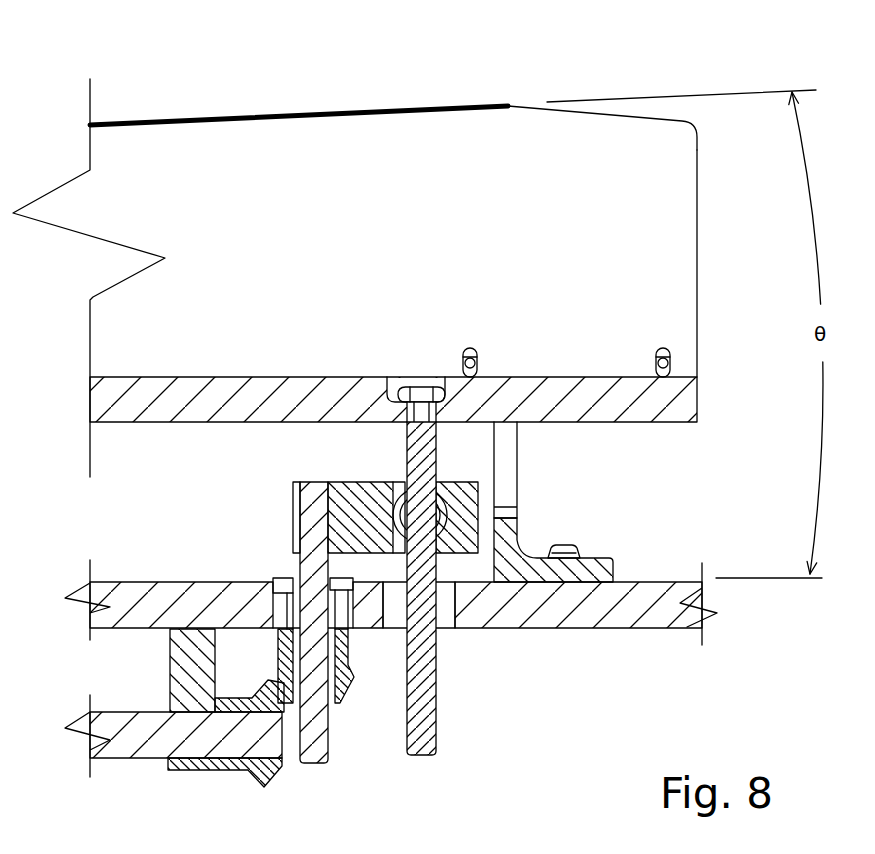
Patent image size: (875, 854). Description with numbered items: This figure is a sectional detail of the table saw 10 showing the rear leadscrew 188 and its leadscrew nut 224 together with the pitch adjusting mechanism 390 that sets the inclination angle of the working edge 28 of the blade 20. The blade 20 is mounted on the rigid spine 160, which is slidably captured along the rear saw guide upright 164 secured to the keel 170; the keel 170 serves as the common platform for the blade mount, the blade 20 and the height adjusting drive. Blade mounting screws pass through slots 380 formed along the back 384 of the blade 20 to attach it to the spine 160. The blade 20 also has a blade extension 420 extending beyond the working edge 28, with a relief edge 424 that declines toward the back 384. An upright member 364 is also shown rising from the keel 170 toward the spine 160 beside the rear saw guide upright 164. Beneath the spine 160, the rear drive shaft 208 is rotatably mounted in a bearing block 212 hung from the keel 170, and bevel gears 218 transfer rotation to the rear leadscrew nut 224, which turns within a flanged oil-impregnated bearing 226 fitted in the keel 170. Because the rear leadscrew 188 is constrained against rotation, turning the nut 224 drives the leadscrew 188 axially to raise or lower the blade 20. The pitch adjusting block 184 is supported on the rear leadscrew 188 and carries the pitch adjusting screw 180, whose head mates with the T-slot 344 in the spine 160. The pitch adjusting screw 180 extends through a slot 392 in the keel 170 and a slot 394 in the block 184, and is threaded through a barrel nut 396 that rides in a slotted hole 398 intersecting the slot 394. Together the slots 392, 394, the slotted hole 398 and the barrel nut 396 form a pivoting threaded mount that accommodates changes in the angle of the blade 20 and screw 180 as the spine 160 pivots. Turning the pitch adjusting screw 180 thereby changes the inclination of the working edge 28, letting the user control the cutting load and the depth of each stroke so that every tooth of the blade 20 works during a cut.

The table saw 10 is at (510, 96).
The blade 20 is at (295, 162).
The working edge 28 is at (261, 113).
The relief edge 424 is at (596, 118).
The blade extension 420 is at (681, 277).
The spine 160 is at (145, 408).
The T-slot 344 is at (395, 397).
The slot 392 is at (420, 388).
The slots 380 is at (663, 348).
The back 384 is at (620, 380).
The tube 364 is at (510, 472).
The keel 170 is at (630, 618).
The rear saw guide upright 164 is at (513, 553).
The rear drive shaft 208 is at (112, 750).
The bearing block 212 is at (180, 658).
The bevel gears 218 is at (253, 785).
The flanged oil-impregnated bearing 226 is at (275, 590).
The rear leadscrew nut 224 is at (294, 570).
The rear leadscrew 188 is at (318, 760).
The pitch adjusting block 184 is at (347, 485).
The barrel nut 396 is at (403, 553).
The slotted hole 398 is at (403, 482).
The slot 394 is at (441, 483).
The pitch adjusting screw 180 is at (422, 730).
The pitch adjusting mechanism 390 is at (532, 720).